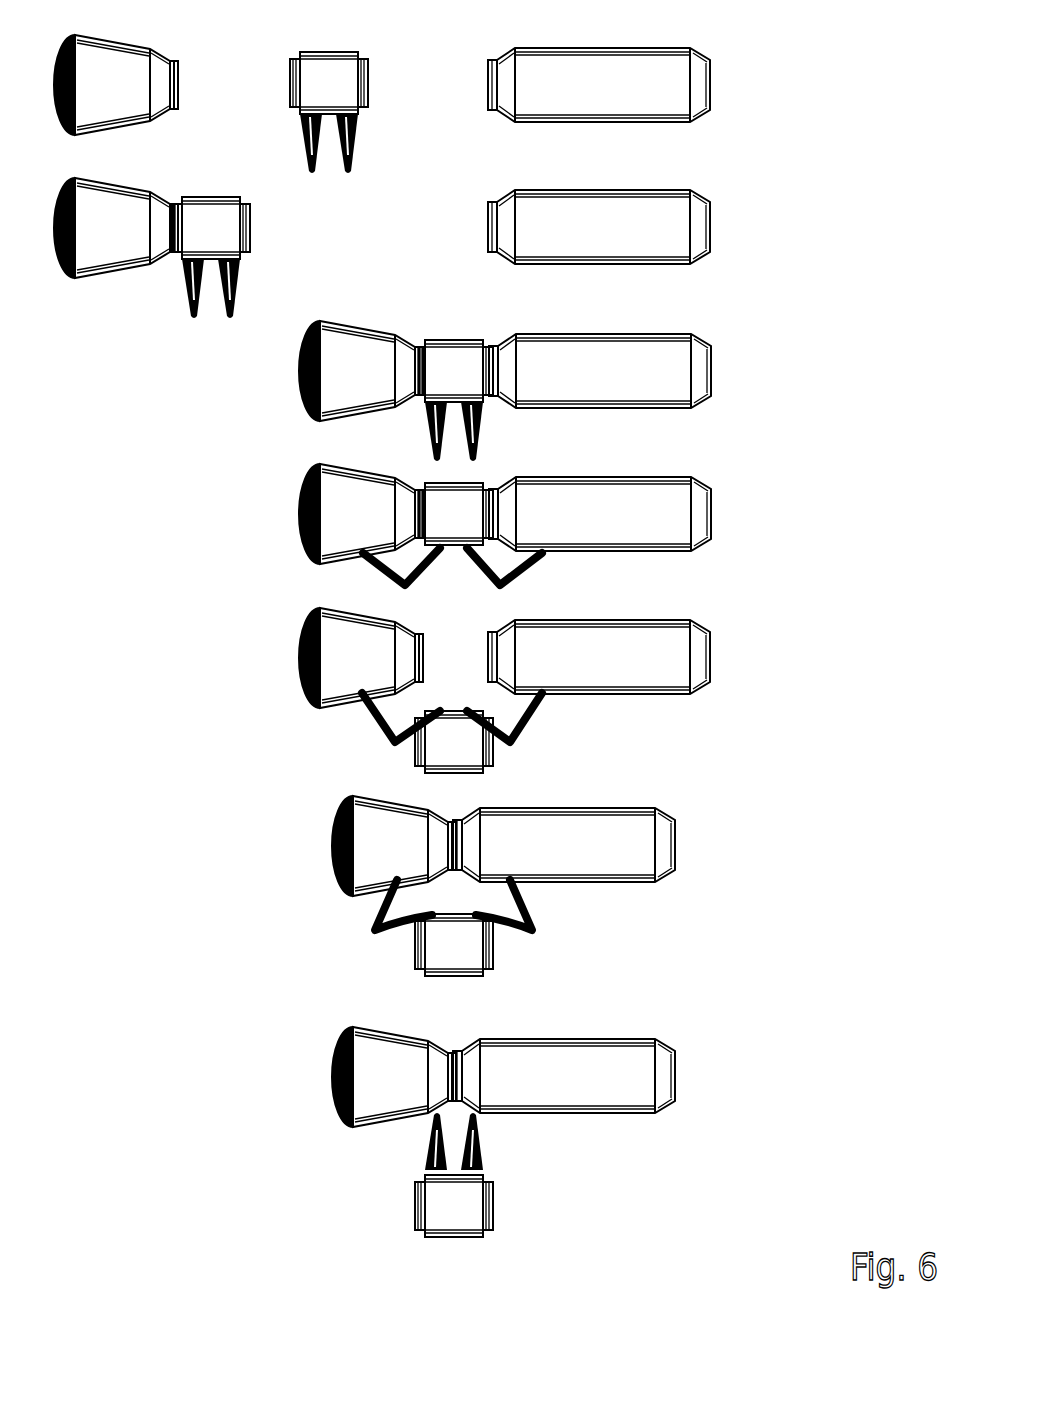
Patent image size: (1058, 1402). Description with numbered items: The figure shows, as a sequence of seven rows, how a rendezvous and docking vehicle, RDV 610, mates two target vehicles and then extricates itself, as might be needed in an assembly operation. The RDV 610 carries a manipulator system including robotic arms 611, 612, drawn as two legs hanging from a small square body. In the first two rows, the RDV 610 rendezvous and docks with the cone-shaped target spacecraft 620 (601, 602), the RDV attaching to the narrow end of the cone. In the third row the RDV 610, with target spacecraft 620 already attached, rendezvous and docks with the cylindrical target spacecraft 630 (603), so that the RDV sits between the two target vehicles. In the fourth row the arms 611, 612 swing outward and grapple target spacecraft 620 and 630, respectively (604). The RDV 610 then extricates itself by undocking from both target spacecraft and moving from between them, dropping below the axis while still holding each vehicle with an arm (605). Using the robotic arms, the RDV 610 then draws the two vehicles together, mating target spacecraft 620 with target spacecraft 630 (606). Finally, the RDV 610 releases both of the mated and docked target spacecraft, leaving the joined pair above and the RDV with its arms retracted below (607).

The rendezvous step 601 is at (740, 37).
The docking step 602 is at (740, 180).
The second rendezvous and docking step 603 is at (740, 322).
The grappling step 604 is at (740, 465).
The extrication step 605 is at (740, 775).
The mating step 606 is at (740, 978).
The release step 607 is at (740, 1240).
The RDV 610 is at (358, 52).
The robotic arm 611 is at (297, 140).
The robotic arm 612 is at (358, 140).
The target spacecraft 620 is at (162, 50).
The target spacecraft 630 is at (488, 82).